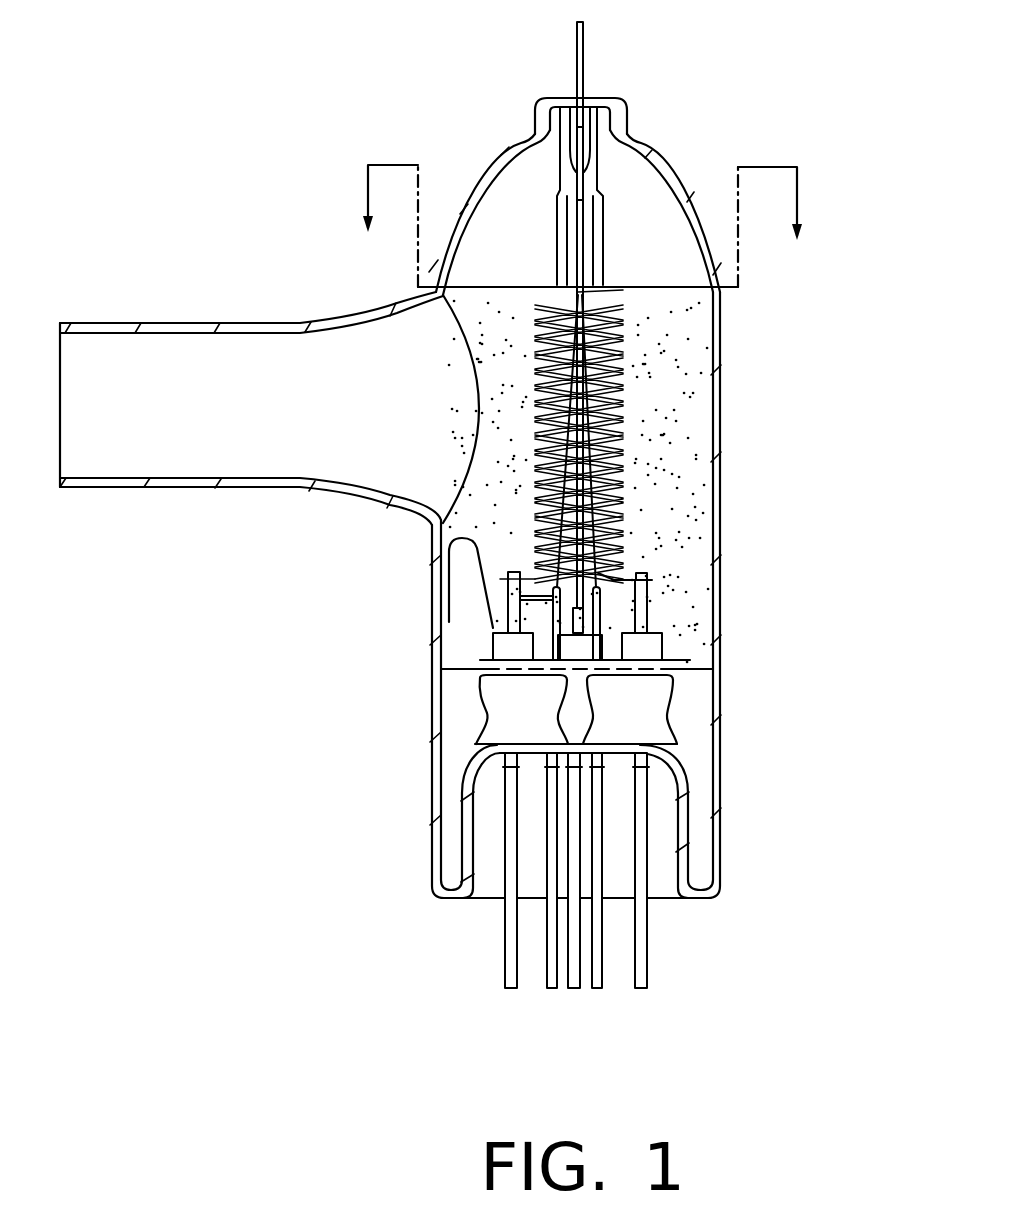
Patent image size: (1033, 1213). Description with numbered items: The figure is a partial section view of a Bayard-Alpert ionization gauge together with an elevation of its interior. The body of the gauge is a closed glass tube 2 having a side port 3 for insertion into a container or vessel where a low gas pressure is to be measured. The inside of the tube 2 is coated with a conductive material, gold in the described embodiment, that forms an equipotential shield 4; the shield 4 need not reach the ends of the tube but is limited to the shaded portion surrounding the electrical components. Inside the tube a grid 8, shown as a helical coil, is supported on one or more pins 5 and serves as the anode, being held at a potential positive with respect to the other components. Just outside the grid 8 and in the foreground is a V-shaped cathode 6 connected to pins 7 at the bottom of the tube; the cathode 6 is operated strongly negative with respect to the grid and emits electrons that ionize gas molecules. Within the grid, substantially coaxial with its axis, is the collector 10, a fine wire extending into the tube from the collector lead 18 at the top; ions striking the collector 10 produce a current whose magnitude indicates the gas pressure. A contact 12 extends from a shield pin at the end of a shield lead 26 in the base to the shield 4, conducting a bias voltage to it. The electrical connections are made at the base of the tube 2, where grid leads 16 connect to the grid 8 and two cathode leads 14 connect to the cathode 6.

The tube 2 is at (803, 853).
The port 3 is at (183, 320).
The equipotential shield 4 is at (706, 429).
The pin 5 is at (669, 588).
The cathode 6 is at (621, 616).
The pins 7 is at (612, 588).
The grid 8 is at (641, 380).
The collector 10 is at (598, 255).
The contact 12 is at (485, 605).
The cathode leads 14 is at (598, 990).
The grid leads 16 is at (648, 944).
The collector lead 18 is at (606, 63).
The shield lead 26 is at (574, 990).